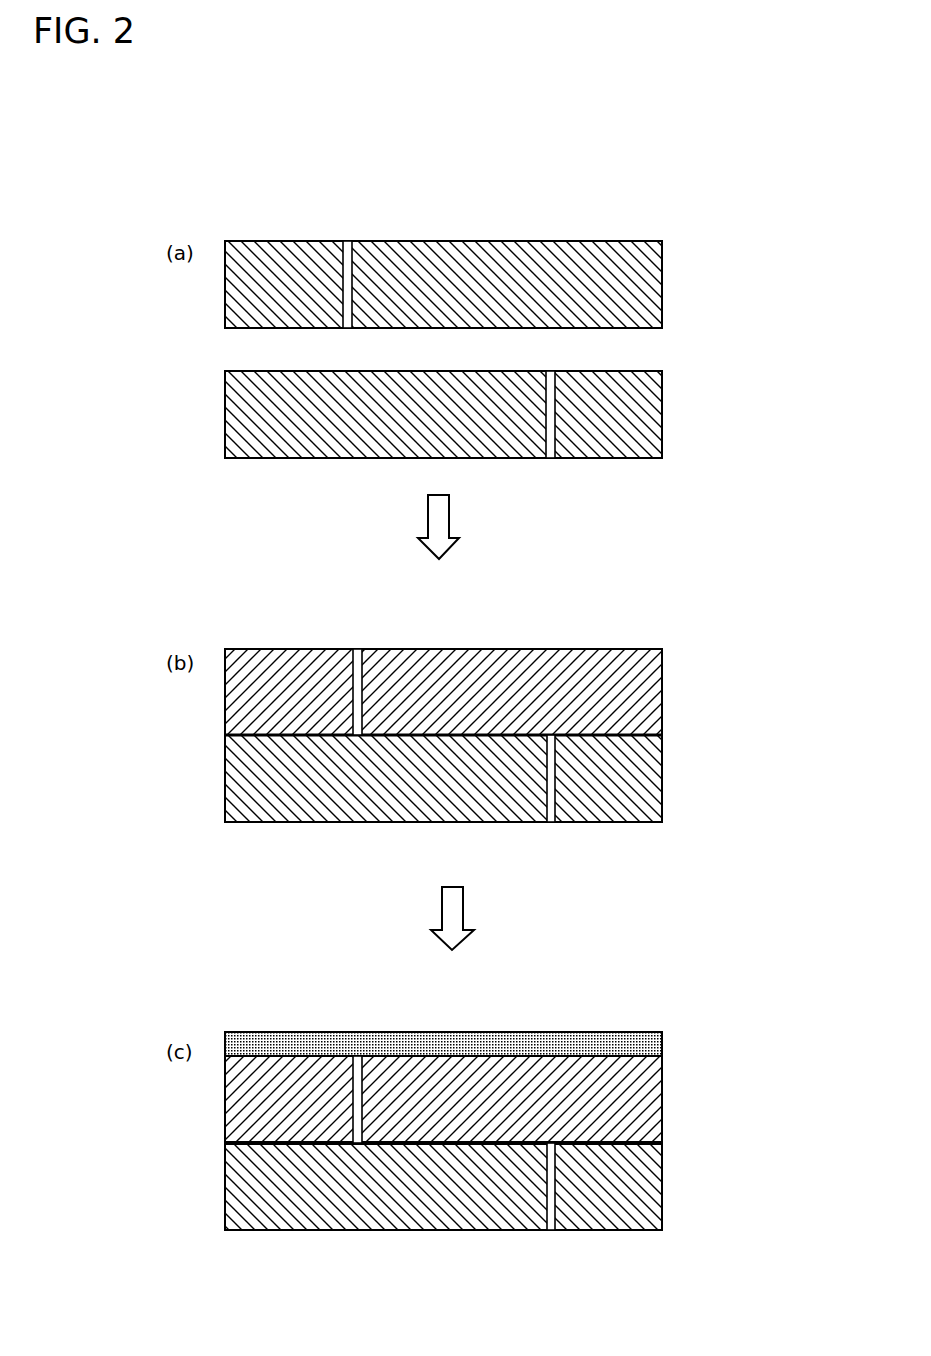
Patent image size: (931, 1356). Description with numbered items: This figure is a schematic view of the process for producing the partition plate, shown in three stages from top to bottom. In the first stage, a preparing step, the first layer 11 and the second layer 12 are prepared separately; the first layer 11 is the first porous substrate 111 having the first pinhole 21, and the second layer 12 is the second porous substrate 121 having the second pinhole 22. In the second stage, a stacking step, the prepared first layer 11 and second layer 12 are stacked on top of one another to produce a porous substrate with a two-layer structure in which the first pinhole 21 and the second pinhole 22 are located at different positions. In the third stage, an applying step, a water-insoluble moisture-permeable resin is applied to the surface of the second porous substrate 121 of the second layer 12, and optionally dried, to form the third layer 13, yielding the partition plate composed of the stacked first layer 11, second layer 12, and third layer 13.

The first layer 11 is at (662, 407).
The first porous substrate 111 is at (662, 438).
The second layer 12 is at (662, 277).
The second porous substrate 121 is at (662, 307).
The third layer 13 is at (662, 1048).
The first pinhole 21 is at (550, 458).
The second pinhole 22 is at (347, 241).